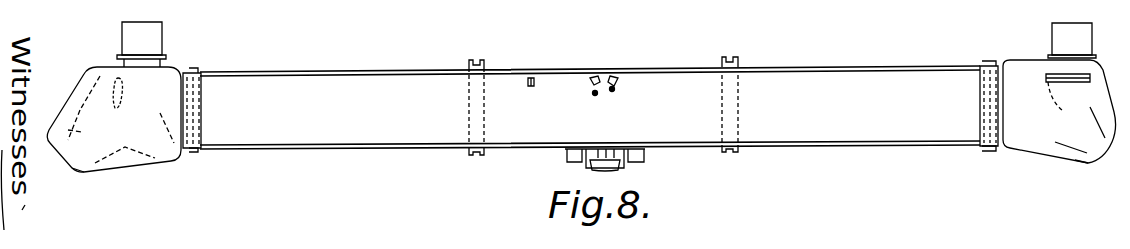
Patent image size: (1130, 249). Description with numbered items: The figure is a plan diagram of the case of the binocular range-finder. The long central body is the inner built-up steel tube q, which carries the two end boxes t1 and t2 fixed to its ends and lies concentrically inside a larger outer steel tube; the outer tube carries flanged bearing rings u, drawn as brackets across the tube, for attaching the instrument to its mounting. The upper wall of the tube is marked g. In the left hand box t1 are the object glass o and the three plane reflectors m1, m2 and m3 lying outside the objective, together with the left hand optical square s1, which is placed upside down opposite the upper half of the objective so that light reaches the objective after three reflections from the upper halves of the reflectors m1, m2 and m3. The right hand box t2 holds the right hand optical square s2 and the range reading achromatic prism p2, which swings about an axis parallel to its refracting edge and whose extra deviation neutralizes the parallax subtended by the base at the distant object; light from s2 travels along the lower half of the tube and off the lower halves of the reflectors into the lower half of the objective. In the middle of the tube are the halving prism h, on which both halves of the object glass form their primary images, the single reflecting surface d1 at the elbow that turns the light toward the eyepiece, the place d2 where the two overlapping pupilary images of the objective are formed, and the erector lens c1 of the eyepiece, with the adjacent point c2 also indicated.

The upper rail of frame g is at (345, 70).
The inner built-up steel tube q is at (325, 144).
The flanged bearing rings u is at (469, 158).
The halving prism h is at (528, 83).
The pupilary images location d2 is at (592, 80).
The reflecting surface at the elbow d1 is at (614, 80).
The stud c2 is at (592, 94).
The erector lens of the eyepiece c1 is at (615, 91).
The object glass o is at (123, 88).
The plane reflector m3 is at (98, 97).
The plane reflector m1 is at (90, 129).
The plane reflector m2 is at (107, 157).
The left hand optical square s1 is at (158, 130).
The box at left hand end t1 is at (84, 172).
The range reading achromatic prism p2 is at (1067, 82).
The right hand optical square s2 is at (1080, 130).
The box at right hand end t2 is at (1073, 158).